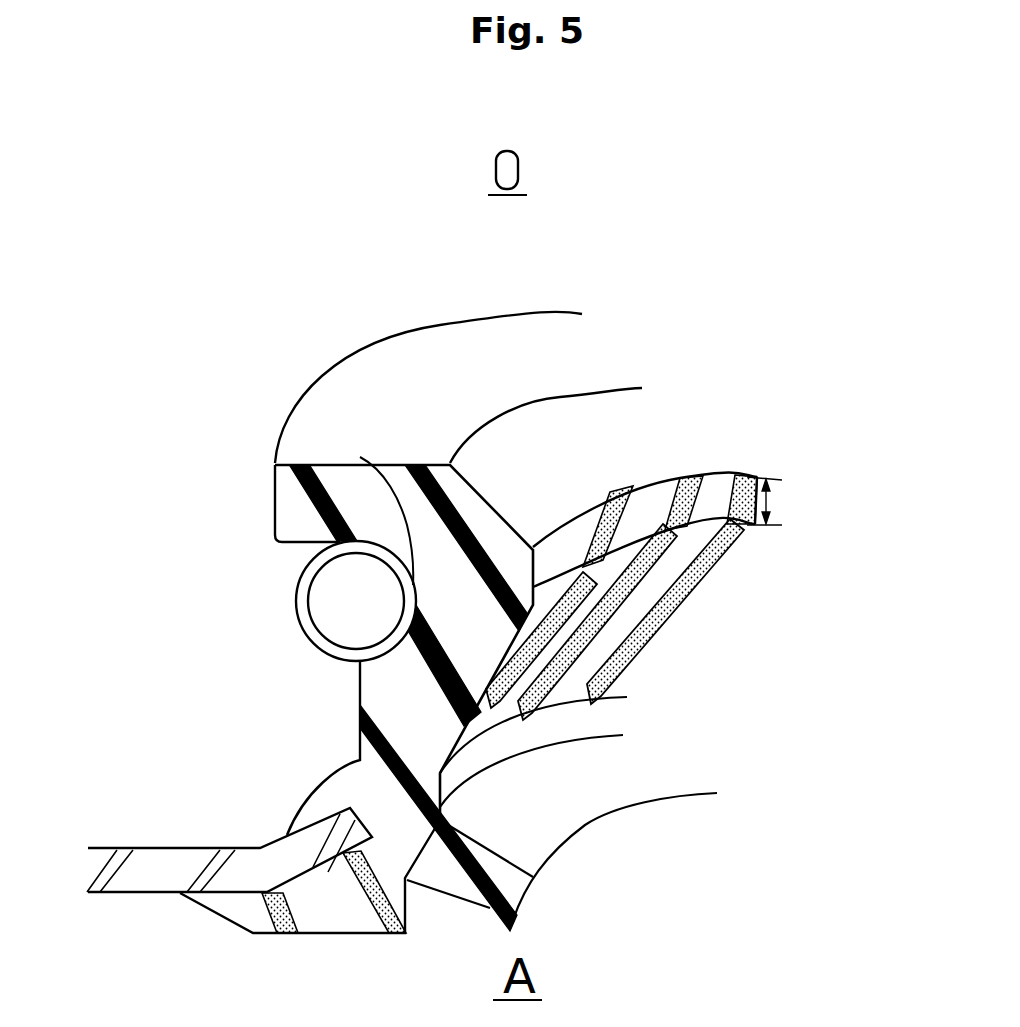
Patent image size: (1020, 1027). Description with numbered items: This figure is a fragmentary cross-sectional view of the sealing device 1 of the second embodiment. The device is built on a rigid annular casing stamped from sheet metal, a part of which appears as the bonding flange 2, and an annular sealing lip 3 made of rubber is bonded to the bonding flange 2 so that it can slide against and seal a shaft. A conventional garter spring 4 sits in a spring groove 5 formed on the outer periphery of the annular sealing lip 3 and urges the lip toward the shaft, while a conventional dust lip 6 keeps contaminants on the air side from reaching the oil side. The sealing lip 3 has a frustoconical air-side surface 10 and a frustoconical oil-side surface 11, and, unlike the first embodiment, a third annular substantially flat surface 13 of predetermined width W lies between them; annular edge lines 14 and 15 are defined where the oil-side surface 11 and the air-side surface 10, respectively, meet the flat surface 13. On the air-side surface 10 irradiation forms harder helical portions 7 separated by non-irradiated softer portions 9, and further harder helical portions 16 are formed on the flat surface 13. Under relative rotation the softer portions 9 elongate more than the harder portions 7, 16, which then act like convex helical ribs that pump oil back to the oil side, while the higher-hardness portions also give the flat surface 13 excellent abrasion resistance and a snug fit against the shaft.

The sealing device 1 is at (113, 365).
The bonding flange 2 is at (155, 867).
The annular sealing lip 3 is at (503, 547).
The garter spring 4 is at (317, 607).
The spring groove 5 is at (360, 457).
The dust lip 6 is at (512, 868).
The harder helical portion 7 is at (660, 620).
The softer portion 9 is at (572, 677).
The frustoconical air-side surface 10 is at (533, 603).
The frustoconical oil-side surface 11 is at (607, 430).
The third annular flat surface 13 is at (597, 492).
The annular edge line 14 is at (715, 477).
The annular edge line 15 is at (753, 525).
The harder helical portions 16 is at (747, 497).